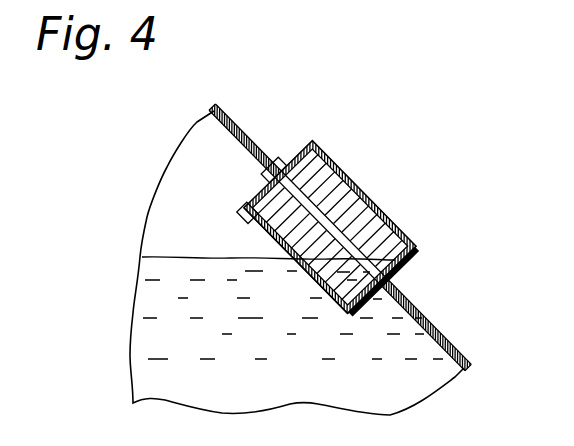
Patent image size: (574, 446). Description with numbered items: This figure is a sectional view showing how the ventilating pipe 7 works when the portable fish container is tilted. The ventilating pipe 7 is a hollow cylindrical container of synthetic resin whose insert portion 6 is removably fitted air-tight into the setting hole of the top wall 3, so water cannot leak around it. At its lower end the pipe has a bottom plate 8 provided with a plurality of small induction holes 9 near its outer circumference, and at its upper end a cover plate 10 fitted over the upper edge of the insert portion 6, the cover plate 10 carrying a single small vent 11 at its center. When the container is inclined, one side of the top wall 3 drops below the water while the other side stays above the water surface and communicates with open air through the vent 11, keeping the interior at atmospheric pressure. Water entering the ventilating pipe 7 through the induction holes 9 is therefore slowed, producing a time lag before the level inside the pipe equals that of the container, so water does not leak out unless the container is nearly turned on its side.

The top wall 3 is at (257, 152).
The insert portion 6 is at (262, 189).
The ventilating pipe 7 is at (420, 251).
The bottom plate 8 is at (243, 221).
The induction holes 9 is at (332, 297).
The cover plate 10 is at (373, 223).
The vent 11 is at (366, 197).